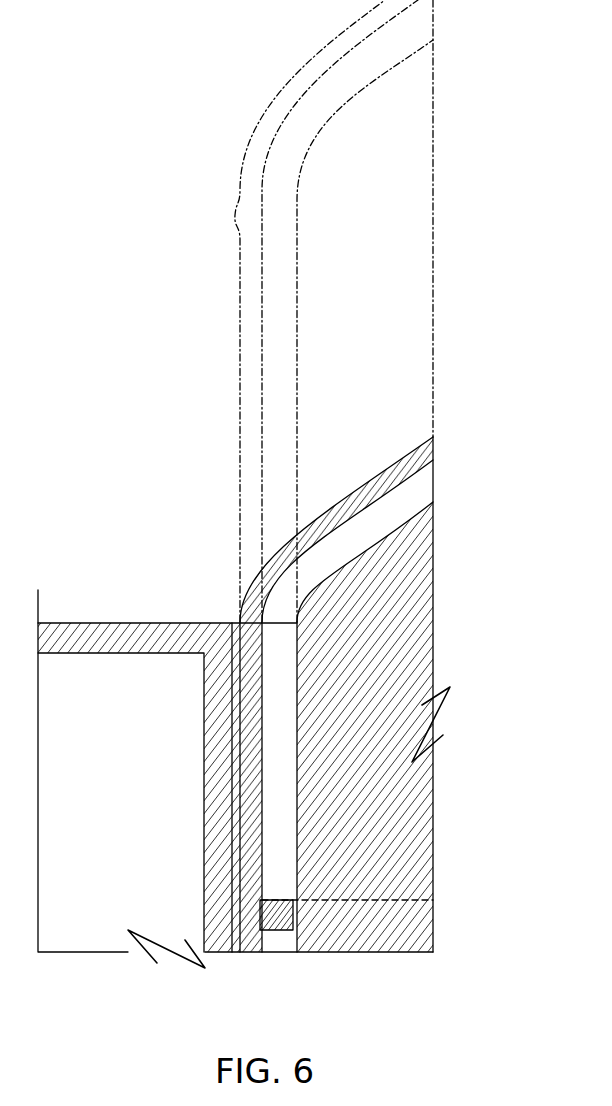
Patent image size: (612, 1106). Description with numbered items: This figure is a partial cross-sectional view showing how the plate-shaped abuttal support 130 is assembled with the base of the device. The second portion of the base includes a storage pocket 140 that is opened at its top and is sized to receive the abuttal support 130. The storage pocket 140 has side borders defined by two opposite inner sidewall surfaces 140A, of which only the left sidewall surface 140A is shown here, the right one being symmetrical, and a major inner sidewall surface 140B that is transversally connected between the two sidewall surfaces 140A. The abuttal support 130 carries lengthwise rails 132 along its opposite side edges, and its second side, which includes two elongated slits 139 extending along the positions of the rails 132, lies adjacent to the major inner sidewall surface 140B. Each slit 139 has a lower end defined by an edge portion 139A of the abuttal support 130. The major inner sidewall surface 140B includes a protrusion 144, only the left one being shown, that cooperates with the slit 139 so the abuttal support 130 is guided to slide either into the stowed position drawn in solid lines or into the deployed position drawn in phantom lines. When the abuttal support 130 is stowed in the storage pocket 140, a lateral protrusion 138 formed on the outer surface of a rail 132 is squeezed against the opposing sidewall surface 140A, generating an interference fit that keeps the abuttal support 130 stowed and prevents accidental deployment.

The abuttal support 130 is at (413, 622).
The rails 132 is at (250, 773).
The lateral protrusion 138 is at (232, 658).
The slits 139 is at (259, 822).
The edge portion 139A is at (283, 897).
The storage pocket 140 is at (226, 558).
The inner sidewall surface 140A is at (232, 748).
The major inner sidewall surface 140B is at (275, 712).
The protrusion 144 is at (268, 910).